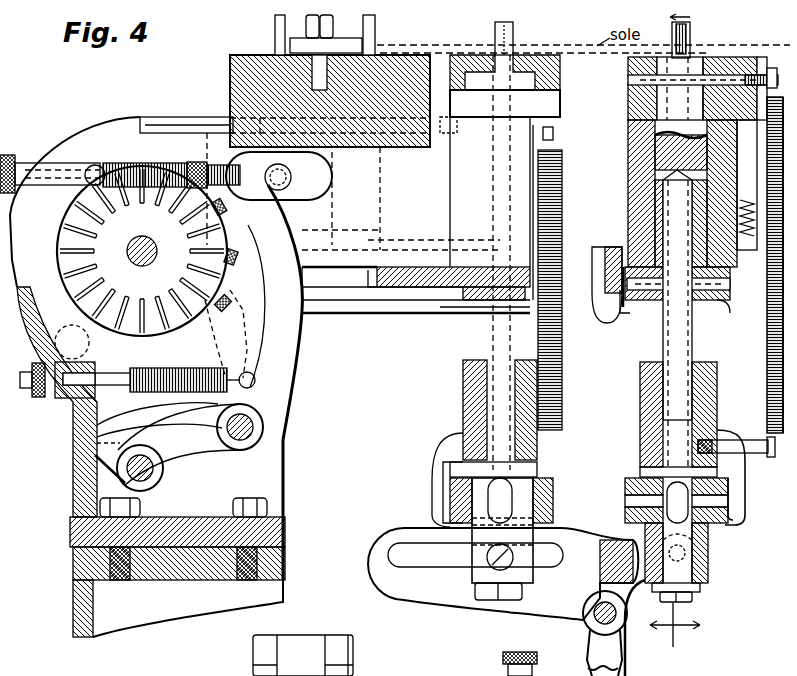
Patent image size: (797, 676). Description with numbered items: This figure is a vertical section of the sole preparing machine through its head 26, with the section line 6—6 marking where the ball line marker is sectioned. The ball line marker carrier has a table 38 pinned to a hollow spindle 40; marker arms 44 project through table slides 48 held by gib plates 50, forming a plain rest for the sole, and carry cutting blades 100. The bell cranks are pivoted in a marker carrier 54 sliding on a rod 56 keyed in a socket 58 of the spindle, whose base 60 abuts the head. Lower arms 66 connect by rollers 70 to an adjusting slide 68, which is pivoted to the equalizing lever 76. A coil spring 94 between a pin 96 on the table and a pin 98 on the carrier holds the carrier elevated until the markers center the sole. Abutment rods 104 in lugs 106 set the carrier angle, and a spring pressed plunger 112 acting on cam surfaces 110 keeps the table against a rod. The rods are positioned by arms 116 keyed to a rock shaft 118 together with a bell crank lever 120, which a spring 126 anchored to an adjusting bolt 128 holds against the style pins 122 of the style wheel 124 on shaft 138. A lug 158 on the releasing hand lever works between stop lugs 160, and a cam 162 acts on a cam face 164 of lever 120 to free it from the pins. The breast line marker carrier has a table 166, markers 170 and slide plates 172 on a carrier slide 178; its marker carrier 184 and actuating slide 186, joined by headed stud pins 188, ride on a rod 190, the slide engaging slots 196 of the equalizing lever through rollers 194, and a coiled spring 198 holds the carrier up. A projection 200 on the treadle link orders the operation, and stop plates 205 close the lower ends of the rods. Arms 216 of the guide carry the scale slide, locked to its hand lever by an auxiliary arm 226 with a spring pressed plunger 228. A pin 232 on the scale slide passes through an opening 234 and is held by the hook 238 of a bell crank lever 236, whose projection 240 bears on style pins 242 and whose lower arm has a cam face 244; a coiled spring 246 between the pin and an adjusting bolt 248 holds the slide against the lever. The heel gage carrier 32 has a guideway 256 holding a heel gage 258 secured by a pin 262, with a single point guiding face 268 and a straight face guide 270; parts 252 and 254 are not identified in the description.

The section line 6— 6 is at (684, 328).
The machine head 26 is at (587, 160).
The heel gage carrier 32 is at (232, 80).
The table 38 is at (727, 57).
The hollow spindle 40 is at (673, 163).
The marker arms 44 is at (680, 57).
The table slides 48 is at (672, 42).
The gib plates 50 is at (697, 57).
The marker carrier 54 is at (705, 390).
The rod 56 is at (682, 343).
The socket 58 is at (647, 173).
The spindle base 60 is at (735, 300).
The lower arms 66 is at (628, 515).
The adjusting slide 68 is at (708, 553).
The rollers 70 is at (650, 498).
The equalizing lever 76 is at (578, 548).
The coil spring 94 is at (768, 335).
The pin 96 is at (773, 95).
The pin 98 is at (757, 440).
The cutting blade 100 is at (690, 57).
The abutment rods 104 is at (390, 308).
The lugs 106 is at (607, 325).
The cam surfaces 110 is at (748, 105).
The spring pressed plunger 112 is at (742, 146).
The arms 116 is at (212, 348).
The rock shaft 118 is at (268, 437).
The bell crank lever 120 is at (267, 403).
The style pins 122 is at (185, 278).
The shoe style wheel 124 is at (70, 237).
The spring 126 is at (150, 370).
The adjusting bolt 128 is at (80, 380).
The shaft 138 is at (157, 226).
The lug 158 is at (150, 408).
The stop lugs 160 is at (175, 430).
The cam 162 is at (95, 462).
The cam face 164 is at (95, 437).
The table 166 is at (553, 55).
The breast line markers 170 is at (495, 28).
The slide plates 172 is at (512, 52).
The carrier slide 178 is at (530, 108).
The marker carrier 184 is at (470, 392).
The actuating slide 186 is at (507, 510).
The headed stud pins 188 is at (470, 500).
The rod 190 is at (500, 165).
The rollers 194 is at (492, 563).
The slots 196 is at (388, 555).
The coiled spring 198 is at (562, 415).
The projection 200 is at (630, 657).
The stop plates 205 is at (500, 592).
The arms 216 is at (405, 675).
The auxiliary arm 226 is at (477, 670).
The spring pressed plunger 228 is at (563, 668).
The pin 232 is at (292, 173).
The opening 234 is at (313, 188).
The bell crank lever 236 is at (298, 345).
The hook 238 is at (215, 162).
The projection 240 is at (252, 250).
The style pins 242 is at (282, 213).
The cam face 244 is at (95, 445).
The coiled spring 246 is at (160, 165).
The adjusting bolt 248 is at (10, 150).
The member 252 is at (395, 662).
The member 254 is at (445, 656).
The guideway 256 is at (262, 666).
The heel gage 258 is at (290, 42).
The pin 262 is at (335, 14).
The single point guiding face 268 is at (378, 38).
The straight face guide 270 is at (275, 18).